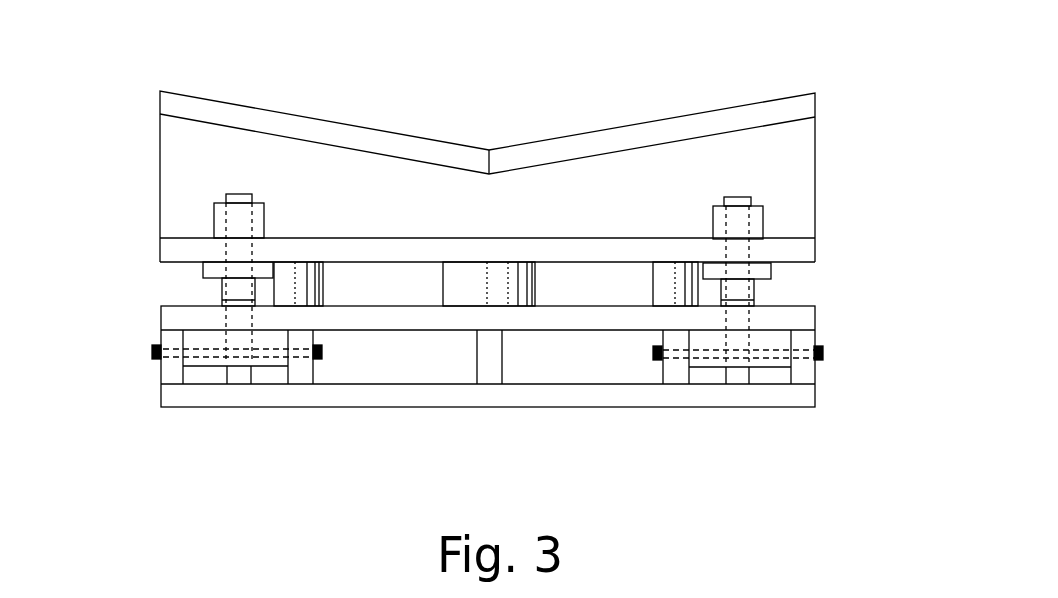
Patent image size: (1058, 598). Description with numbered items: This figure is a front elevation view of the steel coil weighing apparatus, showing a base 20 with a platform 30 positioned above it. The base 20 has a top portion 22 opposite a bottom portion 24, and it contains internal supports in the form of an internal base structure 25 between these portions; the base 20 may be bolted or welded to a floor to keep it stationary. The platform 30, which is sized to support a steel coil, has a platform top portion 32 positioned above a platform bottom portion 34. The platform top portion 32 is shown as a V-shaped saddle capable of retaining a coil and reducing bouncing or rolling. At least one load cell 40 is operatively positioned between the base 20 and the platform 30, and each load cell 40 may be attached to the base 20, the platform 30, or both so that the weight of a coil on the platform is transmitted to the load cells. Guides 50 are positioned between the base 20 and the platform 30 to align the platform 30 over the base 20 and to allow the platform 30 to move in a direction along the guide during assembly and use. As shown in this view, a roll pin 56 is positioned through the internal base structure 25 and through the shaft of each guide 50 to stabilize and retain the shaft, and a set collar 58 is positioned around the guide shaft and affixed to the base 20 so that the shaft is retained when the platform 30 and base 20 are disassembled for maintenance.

The base 20 is at (815, 374).
The top portion 22 is at (168, 317).
The bottom portion 24 is at (496, 400).
The internal base structure 25 is at (675, 377).
The platform 30 is at (632, 125).
The platform top portion 32 is at (765, 108).
The platform bottom portion 34 is at (393, 245).
The load cell 40 is at (443, 280).
The guide 50 is at (763, 210).
The roll pin 56 is at (238, 357).
The set collar 58 is at (222, 303).